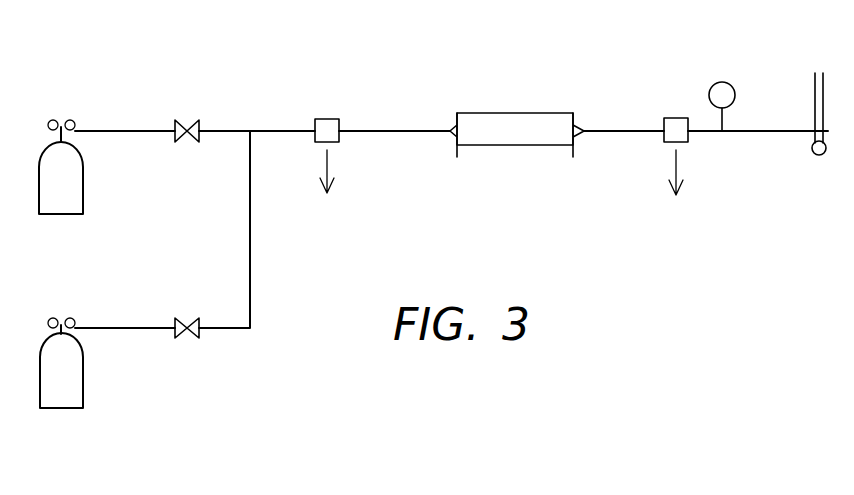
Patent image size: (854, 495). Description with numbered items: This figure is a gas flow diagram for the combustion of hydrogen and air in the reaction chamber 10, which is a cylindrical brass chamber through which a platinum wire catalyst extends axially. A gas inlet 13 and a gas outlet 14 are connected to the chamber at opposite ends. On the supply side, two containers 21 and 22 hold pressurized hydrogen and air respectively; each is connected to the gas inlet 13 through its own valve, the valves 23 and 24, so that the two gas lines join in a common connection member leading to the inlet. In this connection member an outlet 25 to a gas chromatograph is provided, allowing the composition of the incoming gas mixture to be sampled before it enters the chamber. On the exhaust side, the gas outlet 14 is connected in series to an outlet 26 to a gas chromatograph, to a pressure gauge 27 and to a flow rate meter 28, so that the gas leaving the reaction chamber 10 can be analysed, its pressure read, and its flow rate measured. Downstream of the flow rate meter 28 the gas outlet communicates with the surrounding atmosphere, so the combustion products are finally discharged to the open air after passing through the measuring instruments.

The reaction chamber 10 is at (513, 113).
The gas inlet 13 is at (453, 133).
The gas outlet 14 is at (578, 137).
The container 21 is at (77, 187).
The container 22 is at (77, 388).
The valve 23 is at (187, 120).
The valve 24 is at (187, 338).
The outlet to a gas chromatograph 25 is at (328, 128).
The outlet to a gas chromatograph 26 is at (679, 128).
The pressure gauge 27 is at (717, 85).
The flow rate meter 28 is at (815, 83).